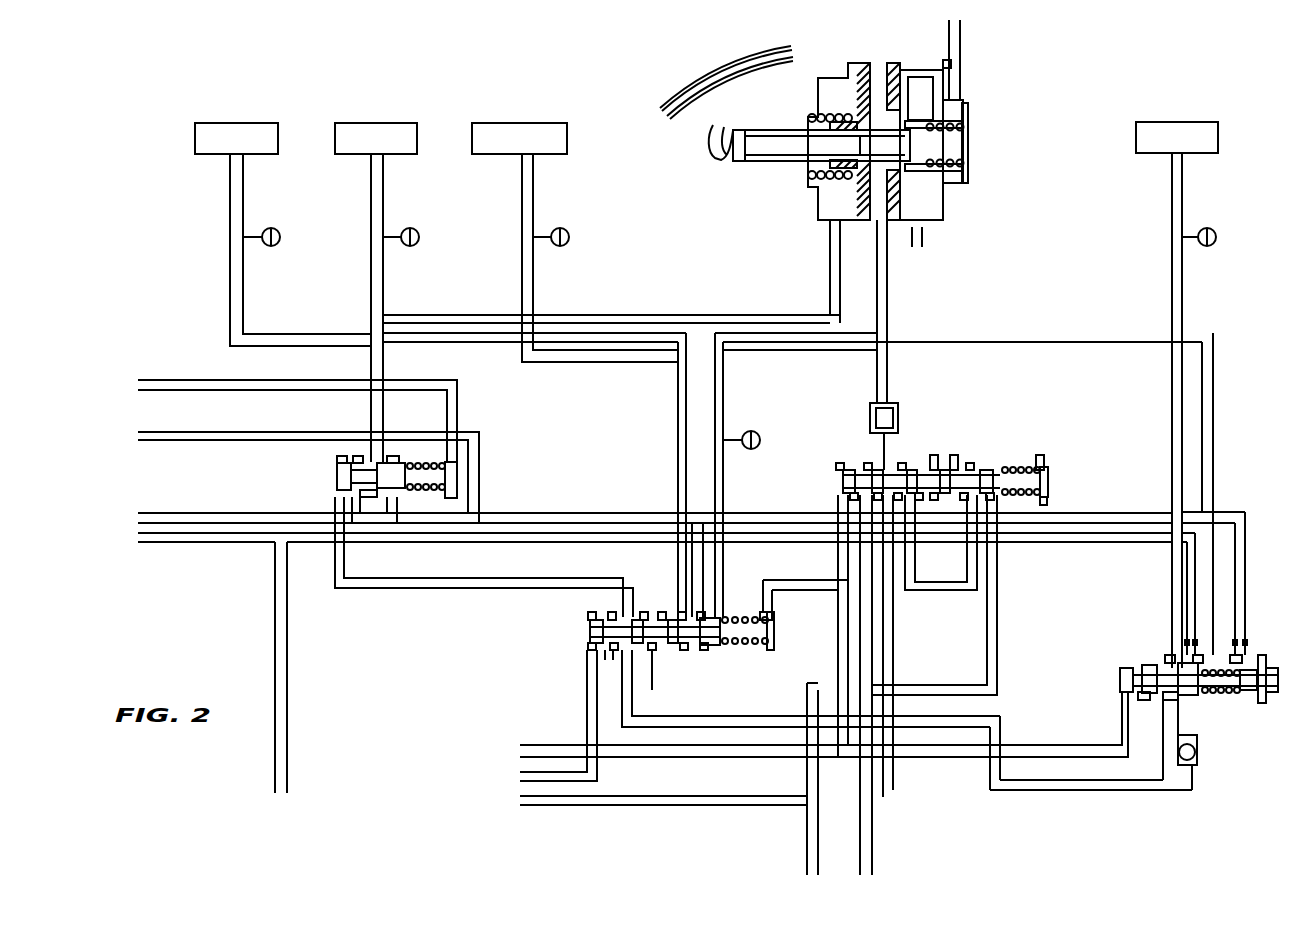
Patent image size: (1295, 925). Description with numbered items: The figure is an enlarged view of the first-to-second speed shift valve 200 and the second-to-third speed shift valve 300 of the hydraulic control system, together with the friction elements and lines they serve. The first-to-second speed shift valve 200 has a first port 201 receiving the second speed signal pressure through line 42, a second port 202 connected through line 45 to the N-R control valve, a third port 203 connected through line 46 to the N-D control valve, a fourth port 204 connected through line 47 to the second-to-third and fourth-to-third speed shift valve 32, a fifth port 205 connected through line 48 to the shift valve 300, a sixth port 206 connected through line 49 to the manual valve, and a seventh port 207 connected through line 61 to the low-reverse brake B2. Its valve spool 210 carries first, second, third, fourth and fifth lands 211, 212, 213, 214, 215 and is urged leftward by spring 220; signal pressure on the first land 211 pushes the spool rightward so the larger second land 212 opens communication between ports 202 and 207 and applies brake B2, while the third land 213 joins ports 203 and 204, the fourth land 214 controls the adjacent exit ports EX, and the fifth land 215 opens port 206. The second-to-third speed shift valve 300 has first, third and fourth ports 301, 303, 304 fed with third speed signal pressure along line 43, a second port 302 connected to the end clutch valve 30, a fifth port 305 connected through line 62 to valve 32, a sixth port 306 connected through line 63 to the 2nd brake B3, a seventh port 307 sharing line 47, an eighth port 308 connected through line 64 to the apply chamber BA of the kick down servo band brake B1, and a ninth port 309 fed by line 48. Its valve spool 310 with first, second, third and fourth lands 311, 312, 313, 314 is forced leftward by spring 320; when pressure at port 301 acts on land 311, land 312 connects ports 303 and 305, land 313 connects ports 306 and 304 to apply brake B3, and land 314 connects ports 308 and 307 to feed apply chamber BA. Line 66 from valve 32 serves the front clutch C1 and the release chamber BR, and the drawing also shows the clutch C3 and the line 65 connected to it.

The 2nd brake B3 is at (238, 128).
The front clutch C1 is at (386, 128).
The low-reverse brake B2 is at (537, 130).
The third clutch C3 is at (1186, 128).
The kick down servo band brake B1 is at (787, 171).
The release chamber BR is at (832, 196).
The apply chamber BA is at (882, 205).
The exhaust port EX is at (878, 497).
The line 66 is at (1176, 294).
The clutch C1 supply passage 65 is at (377, 409).
The line 61 is at (888, 360).
The line 62 is at (395, 588).
The line 63 is at (678, 397).
The line 64 is at (724, 397).
The second-to-third and fourth-to-third speed shift valve 32 is at (318, 481).
The line 47 is at (525, 512).
The first-to-second speed shift valve 200 is at (946, 476).
The first port 201 is at (843, 480).
The second port 202 is at (853, 494).
The third port 203 is at (912, 470).
The fourth port 204 is at (918, 500).
The fifth port 205 is at (992, 550).
The sixth port 206 is at (993, 498).
The seventh port 207 is at (878, 432).
The valve spool 210 is at (1024, 489).
The first land 211 is at (845, 470).
The second land 212 is at (878, 470).
The third land 213 is at (918, 495).
The fourth land 214 is at (950, 478).
The fifth land 215 is at (1000, 478).
The spring 220 is at (1048, 476).
The second-to-third speed shift valve 300 is at (663, 611).
The first port 301 is at (588, 658).
The second port 302 is at (596, 650).
The third port 303 is at (636, 686).
The fourth port 304 is at (658, 651).
The fifth port 305 is at (623, 596).
The sixth port 306 is at (697, 616).
The seventh port 307 is at (688, 616).
The eighth port 308 is at (714, 617).
The ninth port 309 is at (775, 607).
The valve spool 310 is at (737, 638).
The first land 311 is at (596, 625).
The second land 312 is at (636, 618).
The third land 313 is at (682, 641).
The fourth land 314 is at (713, 629).
The spring 320 is at (774, 639).
The end clutch valve 30 is at (1245, 722).
The line 42 is at (838, 564).
The line 43 is at (588, 725).
The line 45 is at (873, 829).
The line 46 is at (905, 777).
The line 48 is at (918, 597).
The line 49 is at (807, 829).